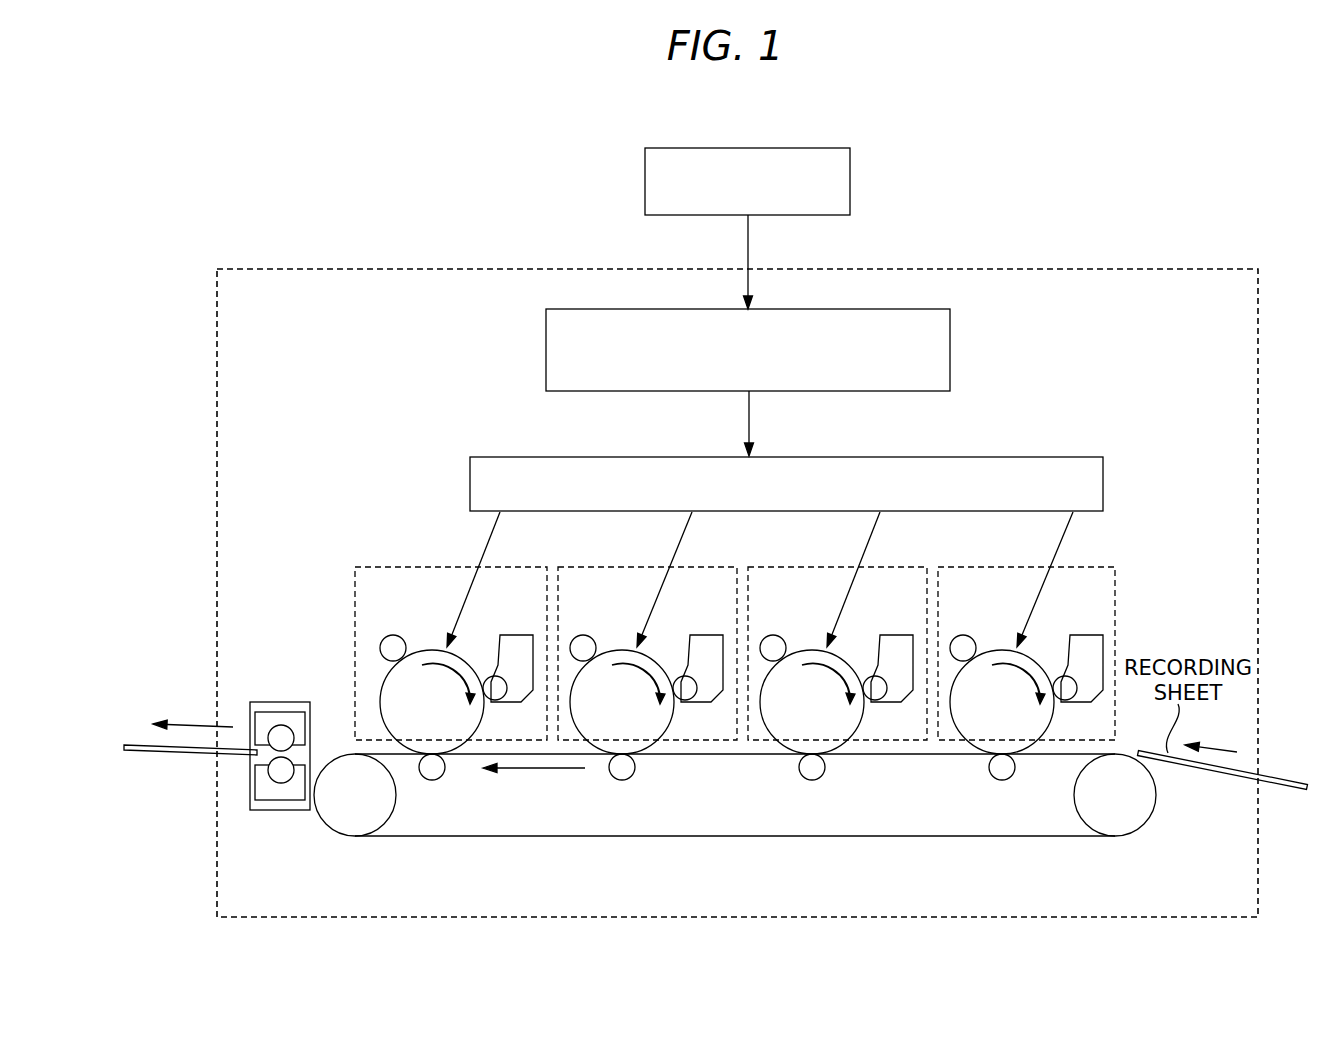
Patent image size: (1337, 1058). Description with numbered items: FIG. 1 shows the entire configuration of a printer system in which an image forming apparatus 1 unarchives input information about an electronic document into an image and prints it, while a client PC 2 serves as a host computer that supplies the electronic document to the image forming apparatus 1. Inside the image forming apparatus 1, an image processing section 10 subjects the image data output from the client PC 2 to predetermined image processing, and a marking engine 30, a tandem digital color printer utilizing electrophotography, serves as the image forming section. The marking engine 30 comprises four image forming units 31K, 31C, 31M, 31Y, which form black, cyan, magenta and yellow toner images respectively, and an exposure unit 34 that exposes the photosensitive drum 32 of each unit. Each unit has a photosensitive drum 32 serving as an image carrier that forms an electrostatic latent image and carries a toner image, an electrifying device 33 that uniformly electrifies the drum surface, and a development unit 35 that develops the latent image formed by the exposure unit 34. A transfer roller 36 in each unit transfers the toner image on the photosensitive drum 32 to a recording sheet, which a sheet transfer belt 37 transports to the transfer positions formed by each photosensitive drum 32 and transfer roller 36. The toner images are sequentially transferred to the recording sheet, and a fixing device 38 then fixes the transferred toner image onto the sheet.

The image forming apparatus 1 is at (1080, 269).
The client PC 2 is at (645, 183).
The image processing section 10 is at (950, 333).
The marking engine 30 is at (794, 514).
The exposure unit 34 is at (1003, 457).
The image forming unit 31K is at (401, 567).
The image forming unit 31C is at (609, 567).
The image forming unit 31M is at (796, 567).
The image forming unit 31Y is at (984, 567).
The photosensitive drum 32 is at (1033, 650).
The electrifying device 33 is at (968, 634).
The development unit 35 is at (1103, 636).
The transfer roller 36 is at (987, 768).
The sheet transfer belt 37 is at (700, 755).
The fixing device 38 is at (292, 702).